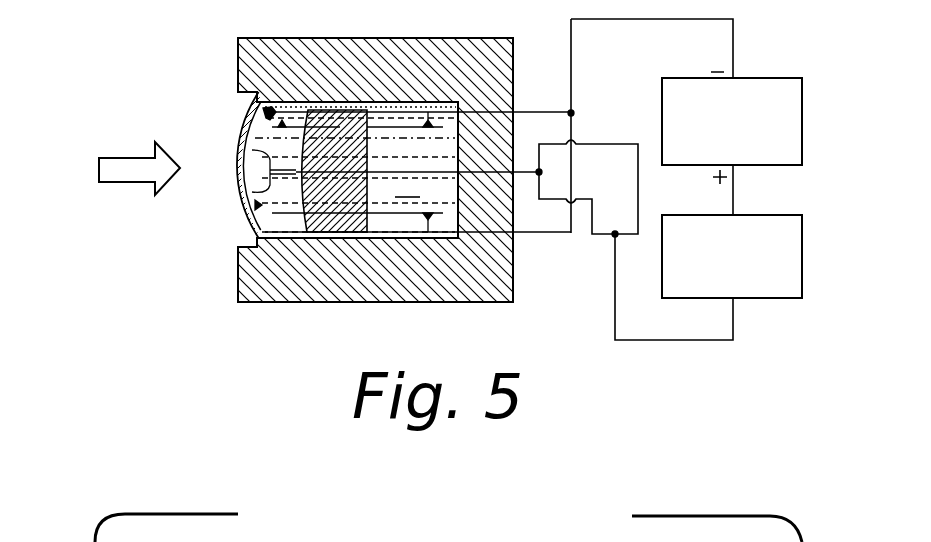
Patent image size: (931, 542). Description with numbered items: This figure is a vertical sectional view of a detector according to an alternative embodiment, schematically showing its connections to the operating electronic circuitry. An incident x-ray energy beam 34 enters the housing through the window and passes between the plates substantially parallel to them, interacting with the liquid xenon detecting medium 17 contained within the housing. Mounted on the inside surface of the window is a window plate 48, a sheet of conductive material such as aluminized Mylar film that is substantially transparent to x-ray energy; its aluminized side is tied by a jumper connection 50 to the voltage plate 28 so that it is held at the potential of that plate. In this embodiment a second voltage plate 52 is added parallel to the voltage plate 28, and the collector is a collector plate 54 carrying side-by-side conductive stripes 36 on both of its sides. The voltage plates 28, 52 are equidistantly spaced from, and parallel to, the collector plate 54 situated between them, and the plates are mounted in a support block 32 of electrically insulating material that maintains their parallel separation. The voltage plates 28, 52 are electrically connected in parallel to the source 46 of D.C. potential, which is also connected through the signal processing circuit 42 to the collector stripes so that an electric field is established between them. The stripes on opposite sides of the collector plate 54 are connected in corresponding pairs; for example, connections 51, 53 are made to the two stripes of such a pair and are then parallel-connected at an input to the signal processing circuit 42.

The liquid xenon detecting medium 17 is at (407, 188).
The voltage plate 28 is at (395, 112).
The support block 32 is at (340, 110).
The incident x-ray energy beam 34 is at (120, 156).
The conductive stripes 36 is at (258, 152).
The signal processing circuit 42 is at (768, 78).
The source of D.C. potential 46 is at (758, 298).
The window plate 48 is at (252, 225).
The jumper connection 50 is at (275, 108).
The connection 51 is at (615, 144).
The second voltage plate 52 is at (417, 214).
The connection 53 is at (598, 238).
The collector plate 54 is at (418, 166).